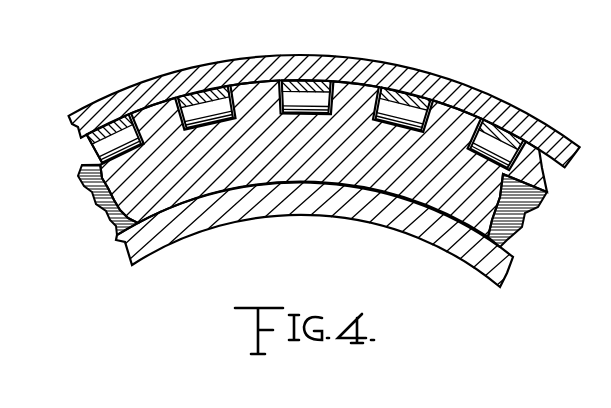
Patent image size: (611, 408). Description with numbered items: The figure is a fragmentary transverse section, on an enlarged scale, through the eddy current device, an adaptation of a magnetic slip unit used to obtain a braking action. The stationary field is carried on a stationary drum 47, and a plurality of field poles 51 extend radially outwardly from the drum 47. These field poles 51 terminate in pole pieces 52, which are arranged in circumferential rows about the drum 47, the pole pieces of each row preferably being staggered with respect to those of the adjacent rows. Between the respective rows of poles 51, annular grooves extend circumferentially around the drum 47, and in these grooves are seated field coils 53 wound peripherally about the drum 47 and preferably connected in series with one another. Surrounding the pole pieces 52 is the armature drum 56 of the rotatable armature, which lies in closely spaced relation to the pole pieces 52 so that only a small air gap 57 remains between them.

The stationary drum 47 is at (360, 212).
The field poles 51 is at (485, 123).
The pole pieces 52 is at (230, 80).
The field coils 53 is at (543, 200).
The armature drum 56 is at (156, 86).
The air gap 57 is at (93, 133).